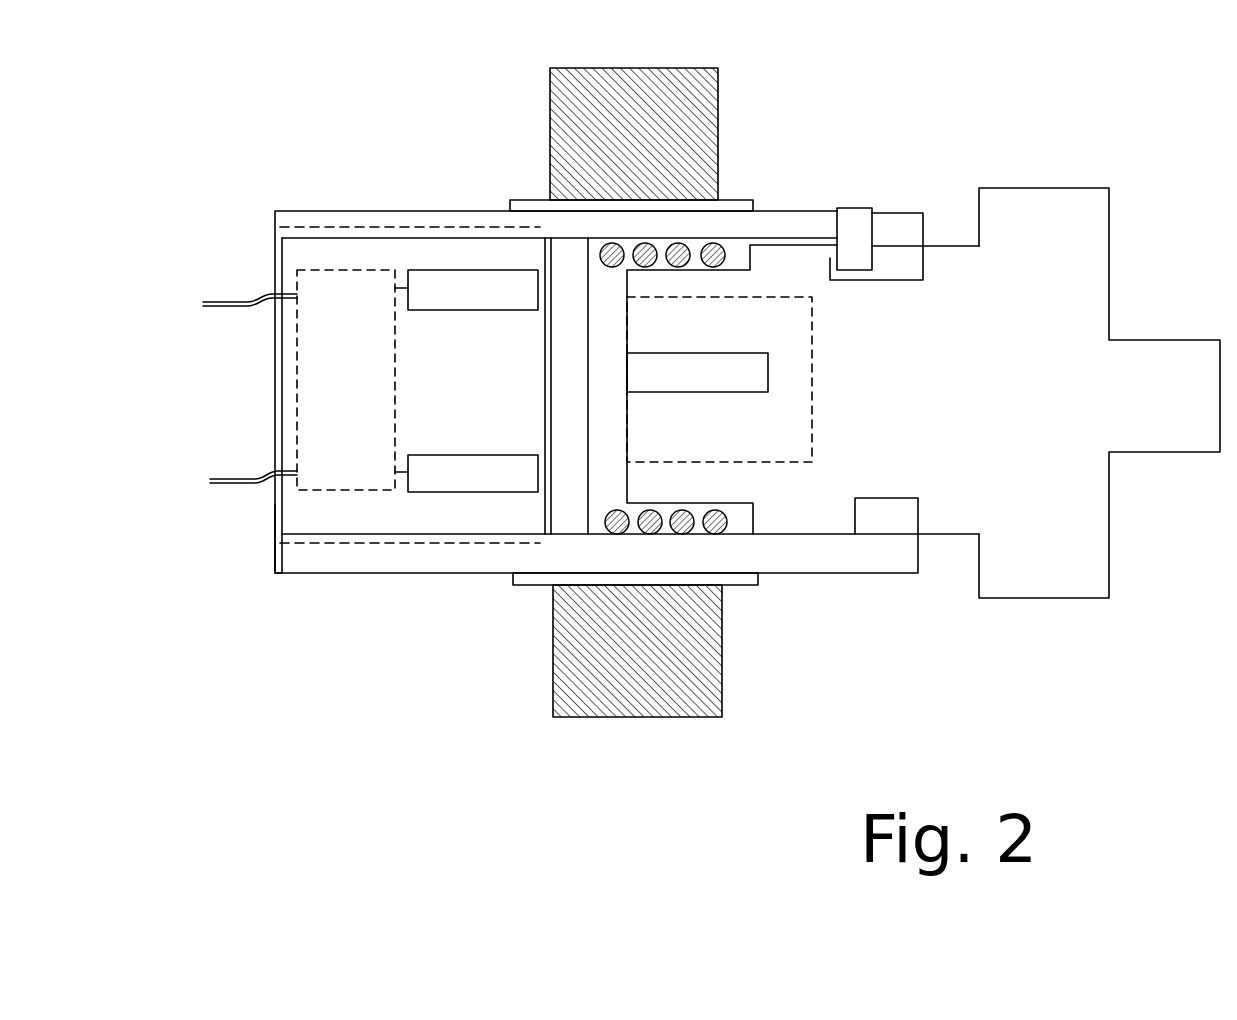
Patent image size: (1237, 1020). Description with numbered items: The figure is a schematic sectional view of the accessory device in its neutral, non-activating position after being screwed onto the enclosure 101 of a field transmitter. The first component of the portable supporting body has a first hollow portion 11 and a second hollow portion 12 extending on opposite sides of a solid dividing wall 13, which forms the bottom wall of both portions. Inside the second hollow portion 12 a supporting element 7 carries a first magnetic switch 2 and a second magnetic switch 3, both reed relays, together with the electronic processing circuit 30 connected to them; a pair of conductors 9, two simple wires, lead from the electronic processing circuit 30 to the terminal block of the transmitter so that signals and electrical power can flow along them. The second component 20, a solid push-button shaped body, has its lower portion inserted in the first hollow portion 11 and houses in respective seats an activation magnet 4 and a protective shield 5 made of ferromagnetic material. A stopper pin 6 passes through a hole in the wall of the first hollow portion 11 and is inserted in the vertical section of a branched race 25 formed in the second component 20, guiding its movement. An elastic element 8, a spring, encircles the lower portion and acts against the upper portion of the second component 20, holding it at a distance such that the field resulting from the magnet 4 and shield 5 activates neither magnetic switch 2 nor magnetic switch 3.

The first magnetic switch 2 is at (455, 477).
The second magnetic switch 3 is at (447, 296).
The activation magnet 4 is at (718, 375).
The protective shield 5 is at (803, 408).
The stopper pin 6 is at (853, 237).
The supporting element 7 is at (282, 511).
The elastic element 8 is at (720, 526).
The conductors 9 is at (236, 303).
The first hollow portion 11 is at (768, 228).
The second hollow portion 12 is at (318, 222).
The dividing wall 13 is at (572, 263).
The second component 20 is at (958, 498).
The branched channel or race 25 is at (903, 268).
The electronic processing circuit 30 is at (358, 468).
The enclosure 101 is at (696, 143).